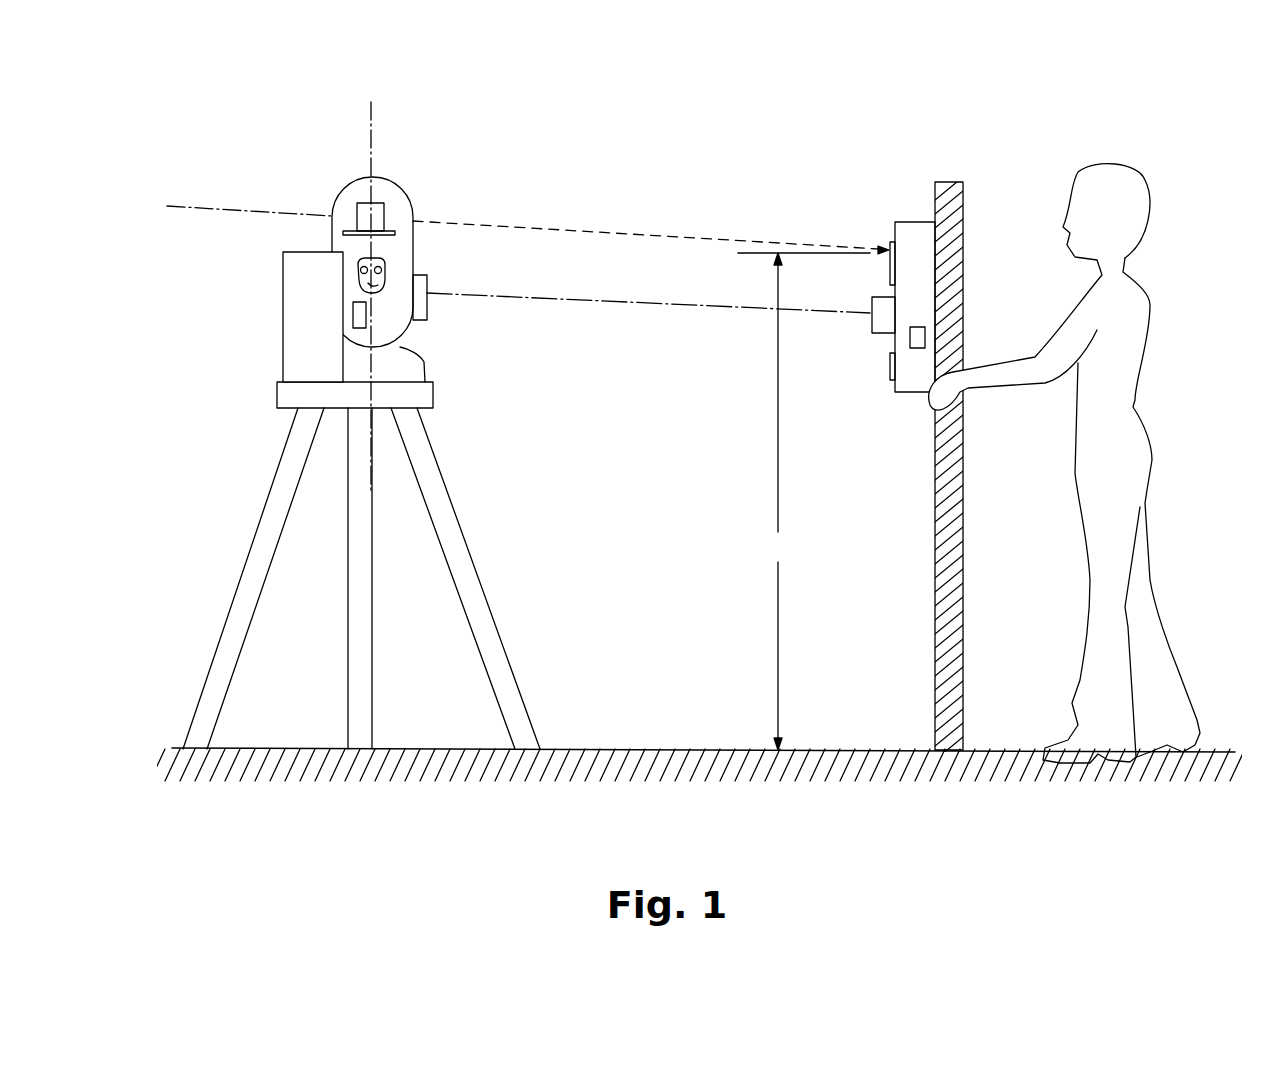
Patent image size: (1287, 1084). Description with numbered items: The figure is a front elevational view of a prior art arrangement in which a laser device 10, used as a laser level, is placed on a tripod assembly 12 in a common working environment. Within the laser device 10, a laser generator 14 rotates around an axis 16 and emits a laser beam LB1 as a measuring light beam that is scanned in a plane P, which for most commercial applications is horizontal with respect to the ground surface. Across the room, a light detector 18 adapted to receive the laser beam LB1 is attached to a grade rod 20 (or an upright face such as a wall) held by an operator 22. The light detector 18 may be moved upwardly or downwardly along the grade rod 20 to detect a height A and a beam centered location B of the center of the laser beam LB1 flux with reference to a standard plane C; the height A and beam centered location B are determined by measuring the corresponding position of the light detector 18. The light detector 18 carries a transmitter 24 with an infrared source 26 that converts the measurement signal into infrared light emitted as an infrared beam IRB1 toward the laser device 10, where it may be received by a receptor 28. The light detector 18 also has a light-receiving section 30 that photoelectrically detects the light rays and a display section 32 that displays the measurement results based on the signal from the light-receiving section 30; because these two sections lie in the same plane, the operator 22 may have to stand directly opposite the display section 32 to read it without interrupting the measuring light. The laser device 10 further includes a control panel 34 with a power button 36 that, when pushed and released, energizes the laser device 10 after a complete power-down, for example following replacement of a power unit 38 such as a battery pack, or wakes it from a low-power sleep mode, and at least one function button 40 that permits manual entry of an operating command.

The laser device 10 is at (326, 196).
The tripod assembly 12 is at (445, 518).
The laser generator 14 is at (375, 213).
The axis 16 is at (373, 114).
The light detector 18 is at (907, 222).
The grade rod 20 is at (935, 470).
The operator 22 is at (1137, 305).
The transmitter 24 is at (919, 348).
The infrared source 26 is at (883, 325).
The receptor 28 is at (420, 283).
The light-receiving section 30 is at (890, 277).
The display section 32 is at (890, 372).
The control panel 34 is at (378, 290).
The power button 36 is at (382, 276).
The power unit 38 is at (358, 320).
The function button 40 is at (370, 270).
The plane P is at (202, 205).
The laser beam LB1 is at (597, 230).
The infrared beam IRB1 is at (575, 300).
The height A is at (778, 501).
The beam centered location B is at (882, 238).
The standard plane C is at (700, 750).